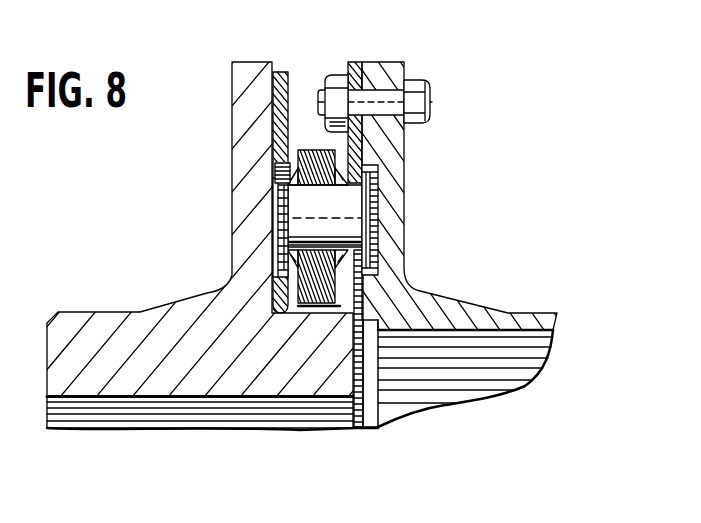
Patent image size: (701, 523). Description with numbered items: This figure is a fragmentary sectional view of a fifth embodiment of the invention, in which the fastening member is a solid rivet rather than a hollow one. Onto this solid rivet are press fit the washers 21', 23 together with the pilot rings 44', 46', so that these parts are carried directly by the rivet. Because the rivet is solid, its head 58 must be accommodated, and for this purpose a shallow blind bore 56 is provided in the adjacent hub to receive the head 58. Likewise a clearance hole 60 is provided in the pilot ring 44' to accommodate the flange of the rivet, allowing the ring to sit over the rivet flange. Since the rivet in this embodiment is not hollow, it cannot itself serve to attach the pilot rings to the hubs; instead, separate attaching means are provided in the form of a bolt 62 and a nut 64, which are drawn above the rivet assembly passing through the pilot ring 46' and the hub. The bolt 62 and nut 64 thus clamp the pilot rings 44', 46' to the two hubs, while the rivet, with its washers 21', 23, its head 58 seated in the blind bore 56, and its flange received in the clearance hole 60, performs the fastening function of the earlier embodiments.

The pilot ring 44' is at (286, 169).
The nut 64 is at (336, 75).
The pilot ring 46' is at (359, 105).
The bolt 62 is at (430, 102).
The washer 21' is at (242, 162).
The washer 23 is at (340, 173).
The shallow blind bore 56 is at (380, 196).
The head 58 is at (368, 229).
The clearance hole 60 is at (280, 227).